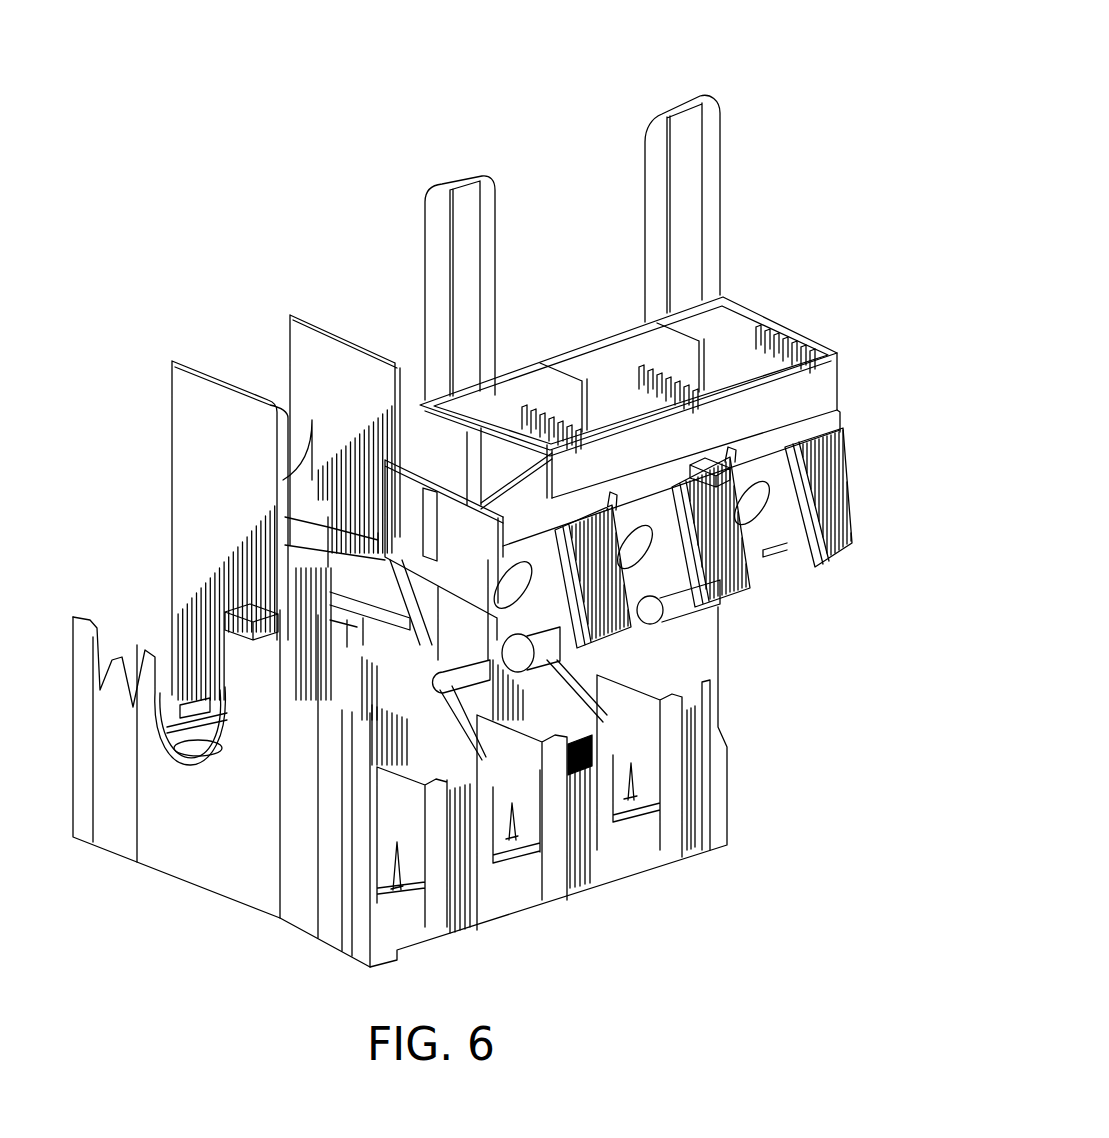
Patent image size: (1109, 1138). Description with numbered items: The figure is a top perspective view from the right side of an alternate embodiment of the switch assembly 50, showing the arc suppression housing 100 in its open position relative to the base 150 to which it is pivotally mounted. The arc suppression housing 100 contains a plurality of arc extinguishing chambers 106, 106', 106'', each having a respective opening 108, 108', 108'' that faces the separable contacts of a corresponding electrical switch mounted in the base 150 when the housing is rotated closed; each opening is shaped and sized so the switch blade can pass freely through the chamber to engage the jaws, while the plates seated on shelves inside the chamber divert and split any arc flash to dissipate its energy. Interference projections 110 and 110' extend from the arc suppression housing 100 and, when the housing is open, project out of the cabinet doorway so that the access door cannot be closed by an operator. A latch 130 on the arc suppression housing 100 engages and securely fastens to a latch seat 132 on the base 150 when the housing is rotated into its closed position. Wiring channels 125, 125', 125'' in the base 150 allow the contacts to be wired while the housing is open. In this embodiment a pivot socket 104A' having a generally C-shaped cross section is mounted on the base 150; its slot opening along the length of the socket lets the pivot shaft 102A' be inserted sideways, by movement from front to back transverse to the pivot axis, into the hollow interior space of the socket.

The contactor assembly 50 is at (817, 80).
The arc suppression housing 100 is at (777, 230).
The arc extinguishing chamber 106 is at (817, 322).
The arc extinguishing chamber 106' is at (621, 319).
The arc extinguishing chamber 106'' is at (458, 377).
The bottom opening 108 is at (873, 479).
The opening 108' is at (774, 531).
The opening 108'' is at (689, 586).
The interference projection 110 is at (734, 208).
The interference projection 110' is at (395, 288).
The latch 130 is at (737, 480).
The base 150 is at (817, 717).
The pivot socket 104A' is at (171, 530).
The contact carrier 102A' is at (410, 558).
The wiring channel 125 is at (706, 770).
The terminal opening 125' is at (579, 823).
The terminal opening 125'' is at (475, 874).
The latch seat 132 is at (585, 768).